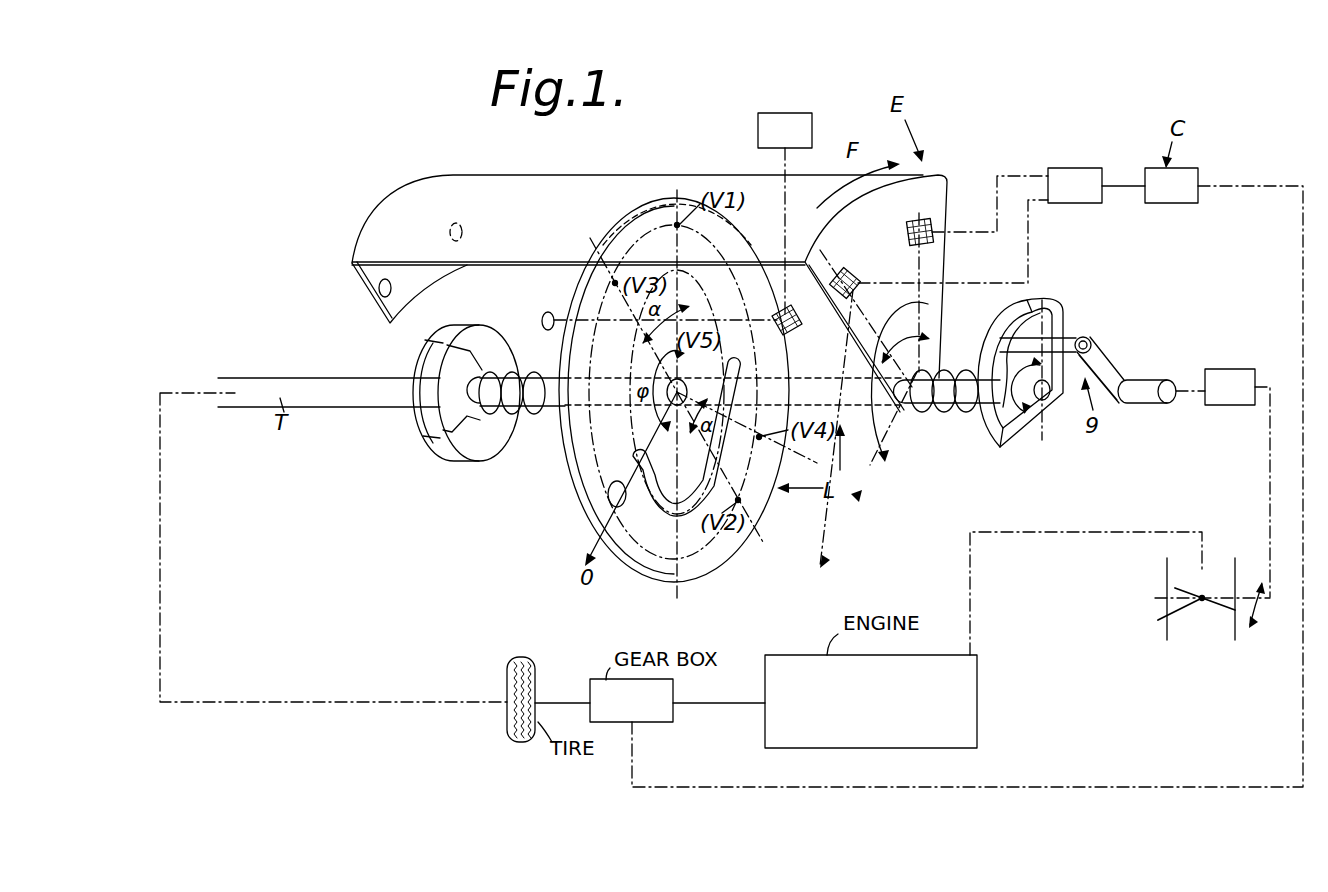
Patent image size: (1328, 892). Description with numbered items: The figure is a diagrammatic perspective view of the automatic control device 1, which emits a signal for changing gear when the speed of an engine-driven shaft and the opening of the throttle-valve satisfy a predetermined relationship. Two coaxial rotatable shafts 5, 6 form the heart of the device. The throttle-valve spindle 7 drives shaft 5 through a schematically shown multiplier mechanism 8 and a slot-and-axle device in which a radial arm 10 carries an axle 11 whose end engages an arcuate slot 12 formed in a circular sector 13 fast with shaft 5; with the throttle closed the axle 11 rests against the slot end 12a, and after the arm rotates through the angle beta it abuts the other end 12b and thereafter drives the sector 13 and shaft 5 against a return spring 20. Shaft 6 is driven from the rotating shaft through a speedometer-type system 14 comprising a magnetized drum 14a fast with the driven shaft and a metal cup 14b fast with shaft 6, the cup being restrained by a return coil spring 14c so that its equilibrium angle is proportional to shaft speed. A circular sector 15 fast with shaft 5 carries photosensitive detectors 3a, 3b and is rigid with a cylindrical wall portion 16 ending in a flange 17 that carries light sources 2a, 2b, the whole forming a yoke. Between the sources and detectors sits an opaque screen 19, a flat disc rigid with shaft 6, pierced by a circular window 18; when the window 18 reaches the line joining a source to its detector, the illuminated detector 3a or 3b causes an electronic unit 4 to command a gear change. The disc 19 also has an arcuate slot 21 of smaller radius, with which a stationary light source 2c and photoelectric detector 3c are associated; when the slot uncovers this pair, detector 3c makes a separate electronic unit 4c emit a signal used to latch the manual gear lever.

The automatic control device 1 is at (380, 200).
The light source 2a is at (462, 228).
The light source 2b is at (379, 288).
The light source 2c is at (548, 312).
The photosensitive detector 3a is at (918, 228).
The photosensitive detector 3b is at (843, 274).
The photoelectric detector 3c is at (797, 330).
The electronic unit 4 is at (1070, 178).
The electronic unit 4c is at (785, 118).
The rotatable shaft 5 is at (950, 378).
The rotatable shaft 6 is at (552, 396).
The throttle-valve spindle 7 is at (1200, 600).
The multiplier mechanism 8 is at (1222, 372).
The radial arm 10 is at (1103, 358).
The axle 11 is at (1060, 343).
The arcuate slot 12 is at (1042, 380).
The end of slot 12a is at (1010, 432).
The end of slot 12b is at (1037, 315).
The circular sector 13 is at (1030, 413).
The speedometer-type drive system 14 is at (437, 426).
The magnetized drum 14a is at (430, 416).
The metal cup 14b is at (442, 446).
The return coil spring 14c is at (527, 372).
The circular sector 15 is at (928, 307).
The cylindrical wall portion 16 is at (641, 186).
The flange 17 is at (386, 312).
The circular window 18 is at (606, 498).
The screen 19 is at (580, 464).
The return spring 20 is at (950, 412).
The arcuate slot 21 is at (673, 512).